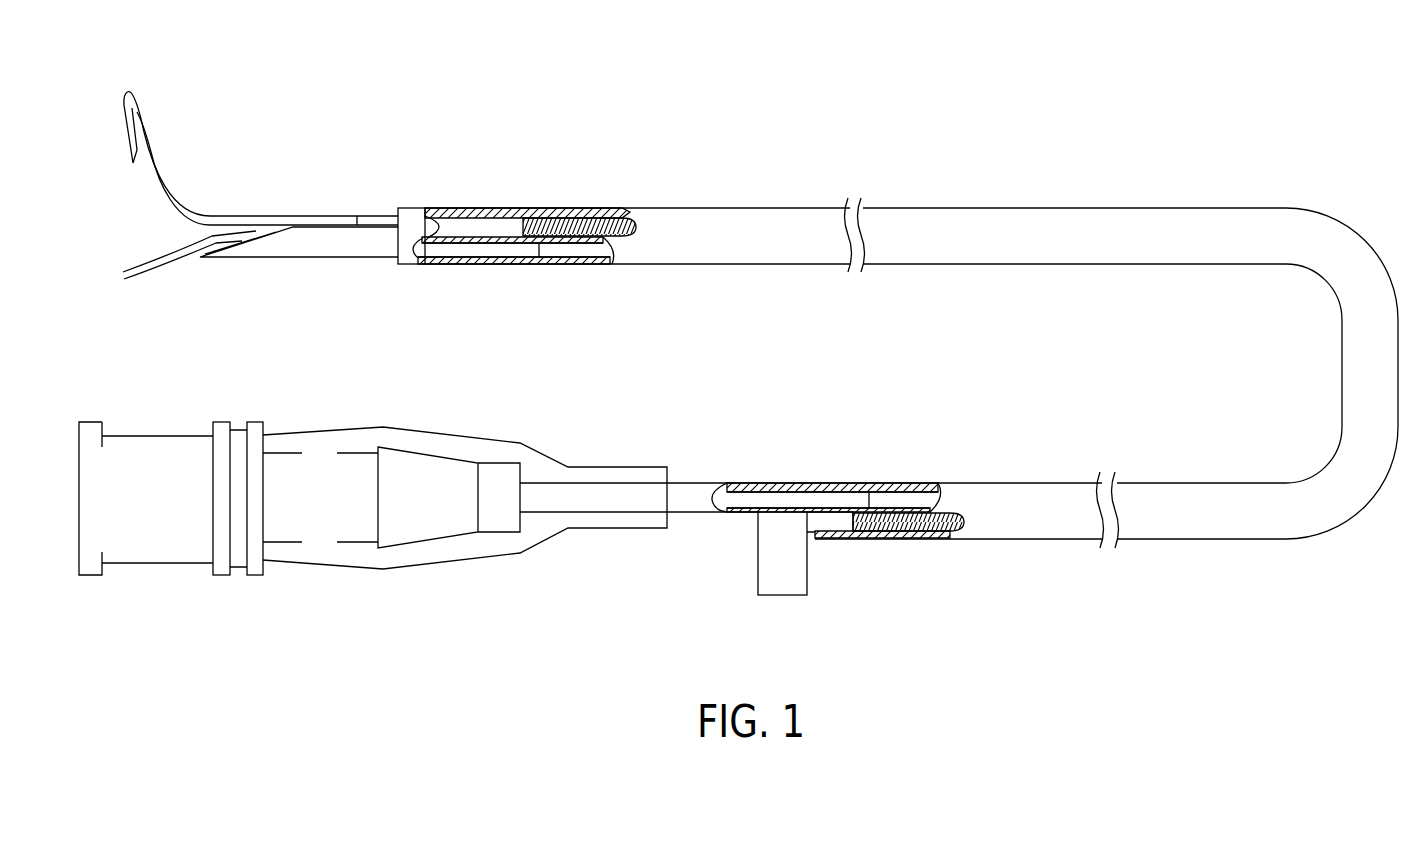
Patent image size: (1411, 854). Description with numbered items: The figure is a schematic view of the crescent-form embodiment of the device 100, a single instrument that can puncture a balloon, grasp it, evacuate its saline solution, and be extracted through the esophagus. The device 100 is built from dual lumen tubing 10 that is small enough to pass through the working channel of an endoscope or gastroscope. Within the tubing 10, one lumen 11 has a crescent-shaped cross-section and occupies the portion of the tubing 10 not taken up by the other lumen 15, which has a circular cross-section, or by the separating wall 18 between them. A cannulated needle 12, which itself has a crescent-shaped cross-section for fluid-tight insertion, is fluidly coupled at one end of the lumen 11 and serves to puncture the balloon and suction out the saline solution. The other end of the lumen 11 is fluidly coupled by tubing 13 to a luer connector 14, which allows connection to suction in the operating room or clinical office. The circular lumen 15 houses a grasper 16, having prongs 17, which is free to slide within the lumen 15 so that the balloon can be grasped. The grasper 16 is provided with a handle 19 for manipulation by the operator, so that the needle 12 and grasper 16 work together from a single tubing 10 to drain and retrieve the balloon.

The device 100 is at (1058, 113).
The dual lumen tubing 10 is at (770, 208).
The lumen 11 is at (567, 252).
The cannulated needle 12 is at (262, 258).
The tubing 13 is at (545, 540).
The luer connector 14 is at (222, 576).
The lumen 15 is at (590, 218).
The grasper 16 is at (283, 215).
The prongs 17 is at (131, 137).
The separating wall 18 is at (595, 246).
The handle 19 is at (792, 597).